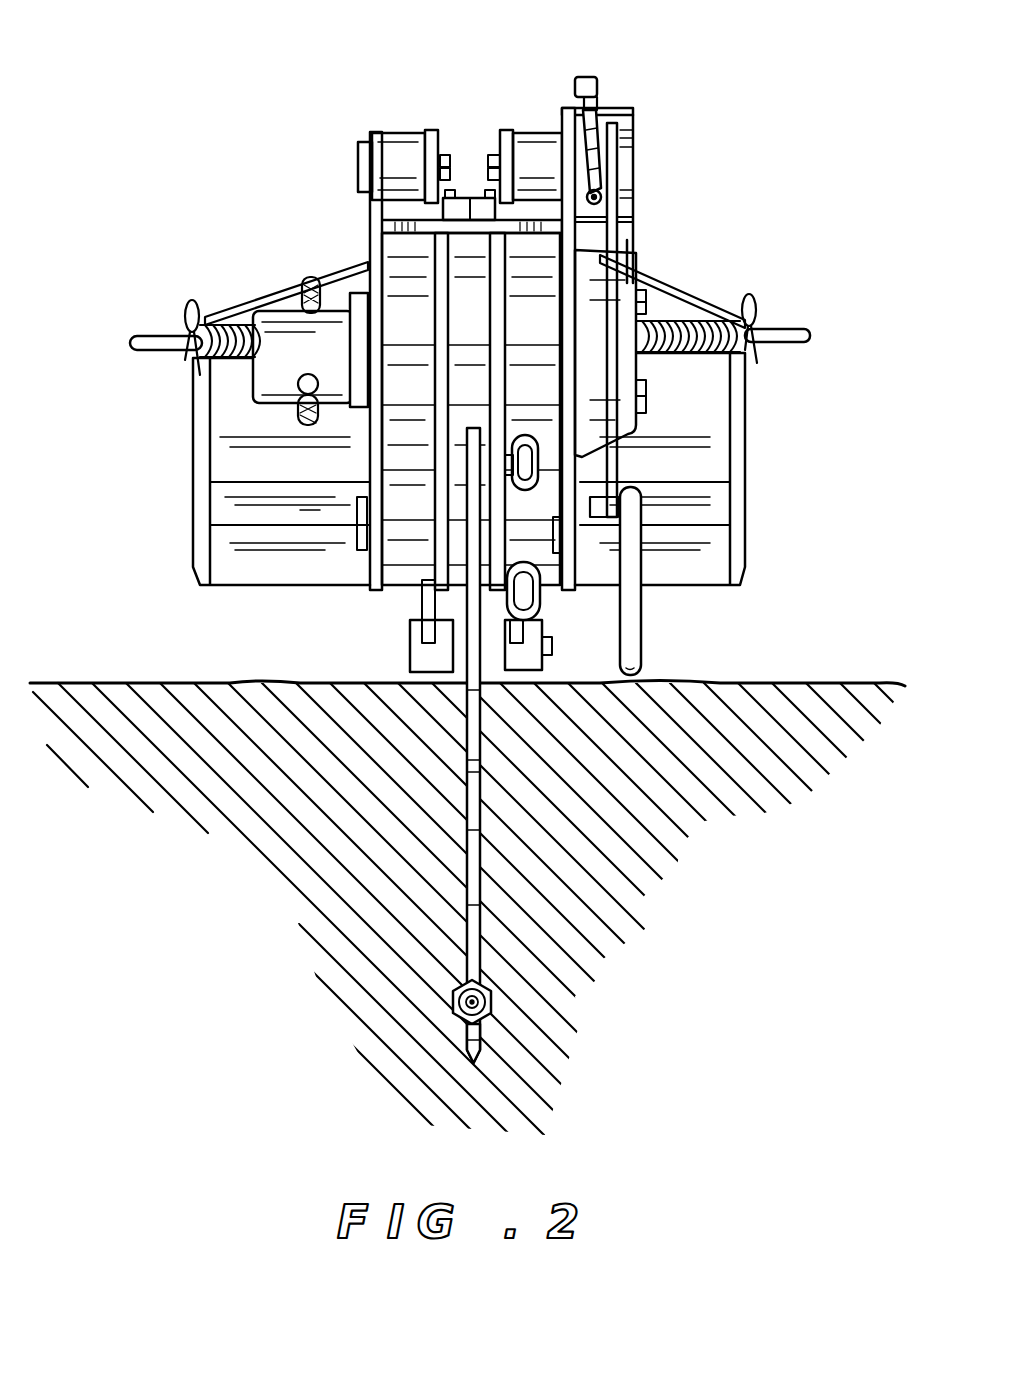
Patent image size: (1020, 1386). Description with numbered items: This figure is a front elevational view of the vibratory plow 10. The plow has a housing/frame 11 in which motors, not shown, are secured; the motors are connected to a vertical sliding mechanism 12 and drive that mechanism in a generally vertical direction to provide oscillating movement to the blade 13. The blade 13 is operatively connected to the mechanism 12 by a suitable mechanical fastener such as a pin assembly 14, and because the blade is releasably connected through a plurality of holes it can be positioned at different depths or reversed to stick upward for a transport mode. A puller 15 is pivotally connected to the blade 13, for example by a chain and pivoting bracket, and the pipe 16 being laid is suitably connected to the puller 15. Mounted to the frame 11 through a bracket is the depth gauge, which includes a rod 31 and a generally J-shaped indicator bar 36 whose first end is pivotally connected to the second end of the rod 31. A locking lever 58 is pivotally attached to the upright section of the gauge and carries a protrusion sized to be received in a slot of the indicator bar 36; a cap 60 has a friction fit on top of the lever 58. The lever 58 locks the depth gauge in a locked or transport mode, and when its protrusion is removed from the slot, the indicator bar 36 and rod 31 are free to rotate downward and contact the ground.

The vibratory plow 10 is at (258, 54).
The housing/frame 11 is at (242, 482).
The vertical sliding mechanism 12 is at (440, 545).
The blade 13 is at (480, 932).
The pin assembly 14 is at (545, 467).
The puller 15 is at (452, 1000).
The pipe 16 is at (466, 1035).
The rod 31 is at (667, 581).
The indicator bar 36 is at (612, 243).
The locking lever 58 is at (590, 138).
The cap 60 is at (598, 78).